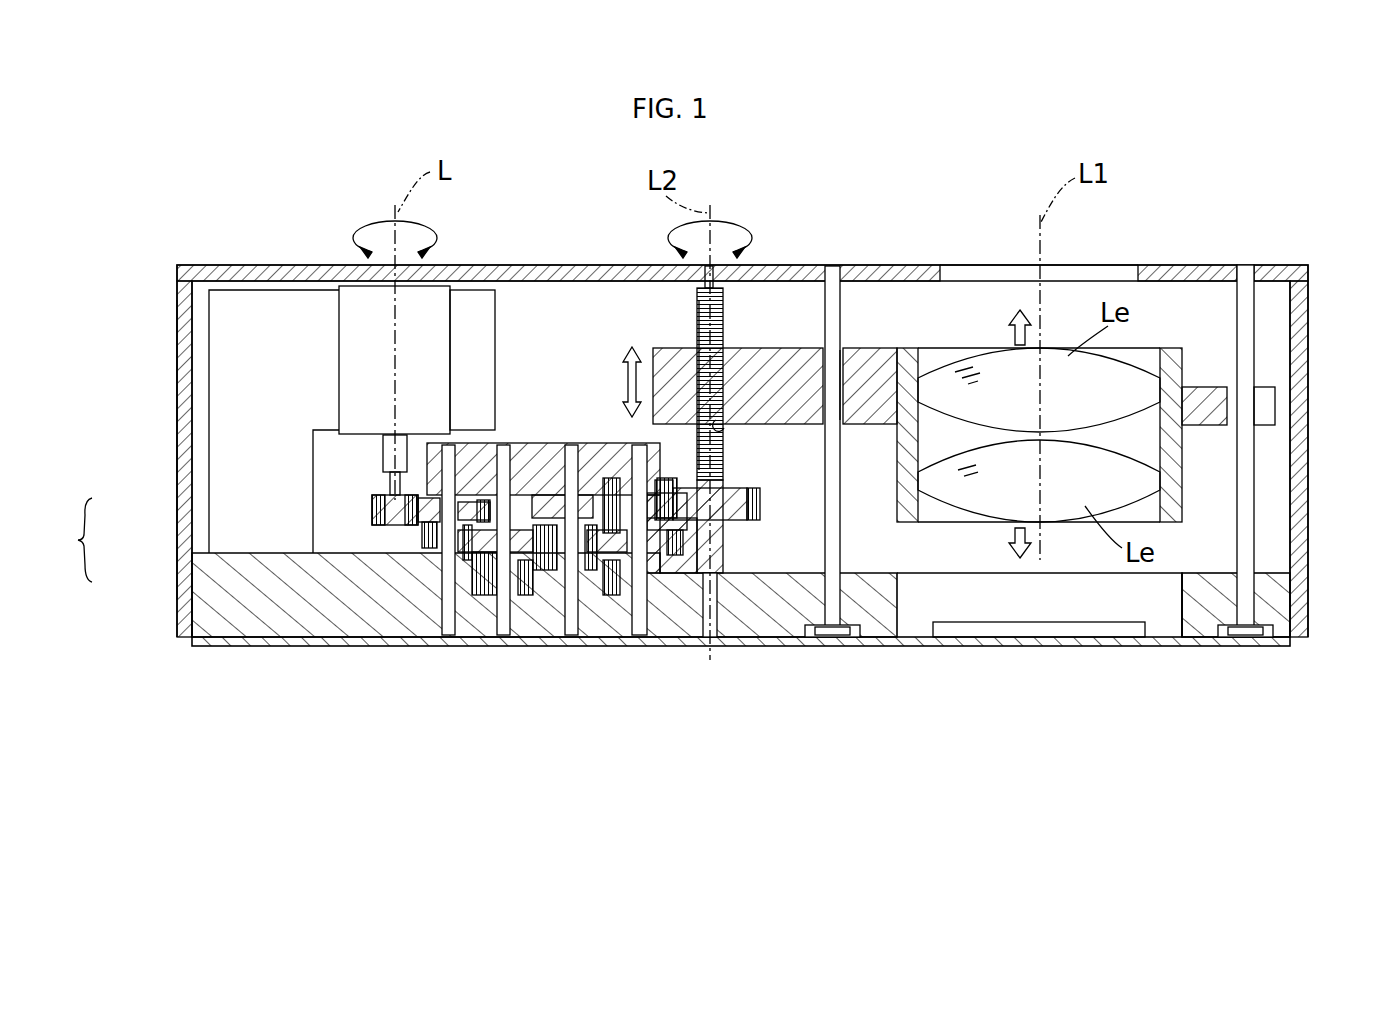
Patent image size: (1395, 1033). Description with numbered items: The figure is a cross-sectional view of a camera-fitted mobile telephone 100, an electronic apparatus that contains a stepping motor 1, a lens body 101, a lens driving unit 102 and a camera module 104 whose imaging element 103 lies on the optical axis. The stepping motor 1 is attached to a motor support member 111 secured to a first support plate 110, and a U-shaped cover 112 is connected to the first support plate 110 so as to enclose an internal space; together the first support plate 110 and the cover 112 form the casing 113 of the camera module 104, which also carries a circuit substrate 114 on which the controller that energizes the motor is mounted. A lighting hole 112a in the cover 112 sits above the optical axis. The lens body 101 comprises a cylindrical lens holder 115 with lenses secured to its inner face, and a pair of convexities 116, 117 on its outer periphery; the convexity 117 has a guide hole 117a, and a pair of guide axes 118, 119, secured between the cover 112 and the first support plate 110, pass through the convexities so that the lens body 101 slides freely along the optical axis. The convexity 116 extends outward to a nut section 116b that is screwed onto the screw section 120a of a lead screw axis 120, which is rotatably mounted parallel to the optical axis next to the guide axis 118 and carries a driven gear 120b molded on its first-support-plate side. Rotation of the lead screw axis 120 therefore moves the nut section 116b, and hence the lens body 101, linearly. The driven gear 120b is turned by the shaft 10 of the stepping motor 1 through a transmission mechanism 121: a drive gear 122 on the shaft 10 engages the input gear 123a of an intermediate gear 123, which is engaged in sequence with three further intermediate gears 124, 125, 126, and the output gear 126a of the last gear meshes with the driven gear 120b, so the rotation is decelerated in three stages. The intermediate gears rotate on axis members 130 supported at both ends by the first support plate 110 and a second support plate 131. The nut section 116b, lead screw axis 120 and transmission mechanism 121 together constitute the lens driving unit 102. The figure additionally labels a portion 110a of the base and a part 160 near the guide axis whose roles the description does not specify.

The stepping motor 1 is at (455, 278).
The shaft 10 is at (388, 455).
The camera-fitted mobile telephone 100 is at (1258, 156).
The lens body 101 is at (1057, 357).
The lens driving unit 102 is at (629, 325).
The imaging element 103 is at (960, 632).
The camera module 104 is at (1308, 260).
The first support plate 110 is at (205, 575).
The base support portion 110a is at (1175, 627).
The motor support member 111 is at (215, 366).
The cover 112 is at (185, 512).
The lighting hole 112a is at (934, 283).
The casing 113 is at (61, 540).
The circuit substrate 114 is at (250, 647).
The lens holder 115 is at (900, 348).
The convexity 116 is at (876, 348).
The nut section 116b is at (725, 428).
The convexity 117 is at (1200, 388).
The guide hole 117a is at (1277, 410).
The guide axis 118 is at (832, 268).
The guide axis 119 is at (1246, 268).
The lead screw axis 120 is at (736, 300).
The screw section 120a is at (723, 332).
The driven gear 120b is at (760, 505).
The transmission mechanism 121 is at (534, 684).
The drive gear 122 is at (375, 513).
The intermediate gear 123 is at (447, 548).
The input gear 123a is at (405, 556).
The intermediate gear 124 is at (525, 556).
The intermediate gear 125 is at (569, 556).
The intermediate gear 126 is at (615, 556).
The output gear 126a is at (680, 556).
The axis member 130 is at (582, 445).
The second support plate 131 is at (615, 445).
The guide bearing portion 160 is at (840, 435).